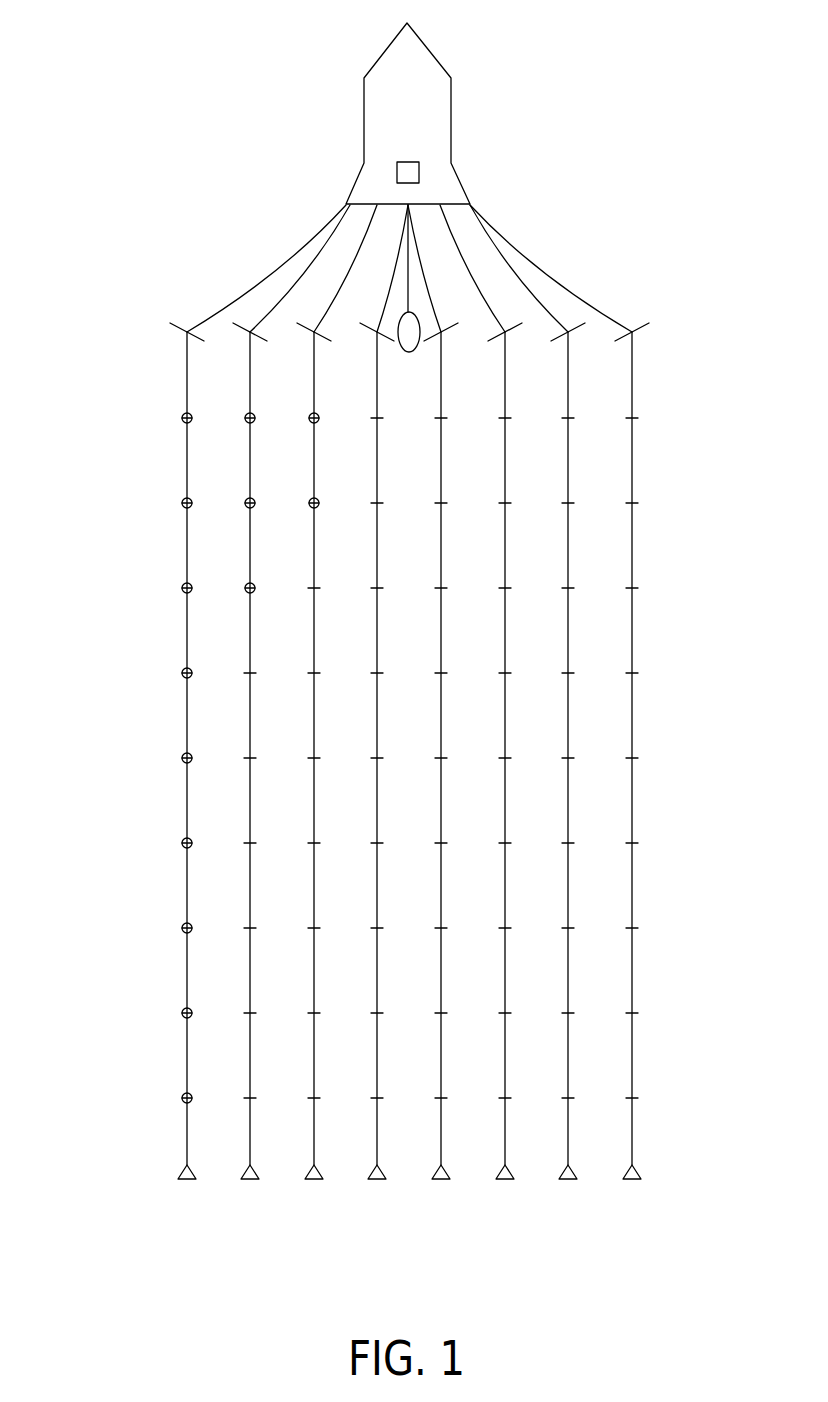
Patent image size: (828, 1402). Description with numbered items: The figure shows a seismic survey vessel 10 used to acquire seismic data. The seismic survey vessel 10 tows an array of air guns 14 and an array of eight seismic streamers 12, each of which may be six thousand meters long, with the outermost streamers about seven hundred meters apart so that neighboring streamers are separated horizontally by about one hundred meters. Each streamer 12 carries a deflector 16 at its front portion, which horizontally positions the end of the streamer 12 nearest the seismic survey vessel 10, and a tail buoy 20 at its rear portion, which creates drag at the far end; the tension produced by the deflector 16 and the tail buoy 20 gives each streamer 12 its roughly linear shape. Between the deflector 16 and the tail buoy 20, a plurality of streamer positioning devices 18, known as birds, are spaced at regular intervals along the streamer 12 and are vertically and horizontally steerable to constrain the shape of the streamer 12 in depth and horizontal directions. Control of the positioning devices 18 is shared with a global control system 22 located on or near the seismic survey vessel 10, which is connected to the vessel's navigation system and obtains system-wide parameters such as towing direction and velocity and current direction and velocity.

The seismic survey vessel 10 is at (418, 118).
The seismic streamer 12 is at (186, 373).
The array of air guns 14 is at (408, 337).
The deflector 16 is at (183, 331).
The streamer positioning devices 18 is at (180, 418).
The tail buoy 20 is at (190, 1180).
The global control system 22 is at (409, 172).